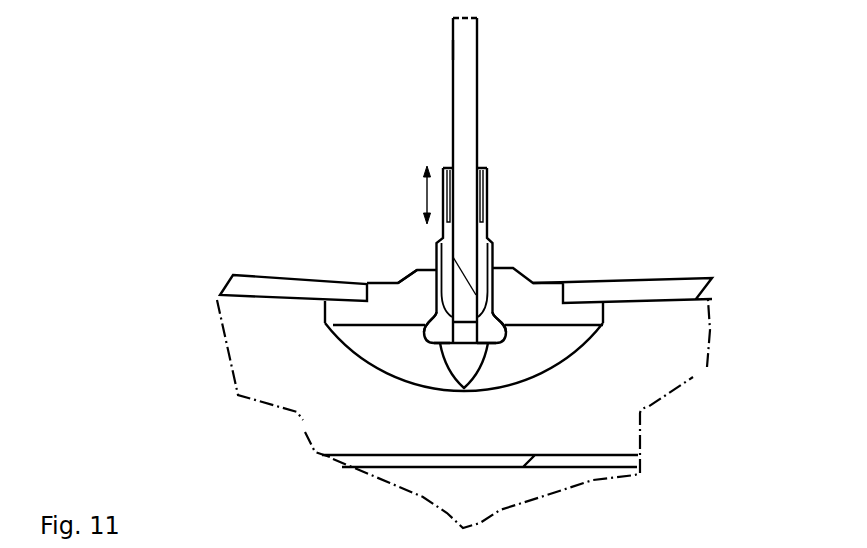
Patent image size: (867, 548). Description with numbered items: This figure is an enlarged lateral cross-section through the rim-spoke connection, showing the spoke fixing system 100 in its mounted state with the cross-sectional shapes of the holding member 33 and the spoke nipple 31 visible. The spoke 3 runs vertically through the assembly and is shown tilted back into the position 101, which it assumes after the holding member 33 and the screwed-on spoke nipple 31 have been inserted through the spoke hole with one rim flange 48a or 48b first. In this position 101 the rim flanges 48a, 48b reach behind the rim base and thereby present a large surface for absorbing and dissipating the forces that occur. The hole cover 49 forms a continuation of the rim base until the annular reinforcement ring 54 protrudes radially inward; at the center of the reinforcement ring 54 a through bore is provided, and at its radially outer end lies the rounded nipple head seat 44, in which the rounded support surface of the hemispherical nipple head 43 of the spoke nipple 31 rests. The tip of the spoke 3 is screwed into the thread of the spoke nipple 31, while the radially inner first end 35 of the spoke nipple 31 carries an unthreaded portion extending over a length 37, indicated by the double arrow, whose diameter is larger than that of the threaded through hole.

The spoke fixing system 100 is at (438, 47).
The position 101 is at (313, 193).
The spoke 3 is at (465, 82).
The spoke nipple 31 is at (500, 185).
The holding member 33 is at (533, 265).
The first end 35 is at (493, 162).
The length 37 is at (423, 188).
The nipple head 43 is at (451, 300).
The nipple head seat 44 is at (420, 310).
The rim flange 48a is at (595, 315).
The rim flange 48b is at (343, 313).
The hole cover 49 is at (390, 273).
The reinforcement ring 54 is at (414, 262).